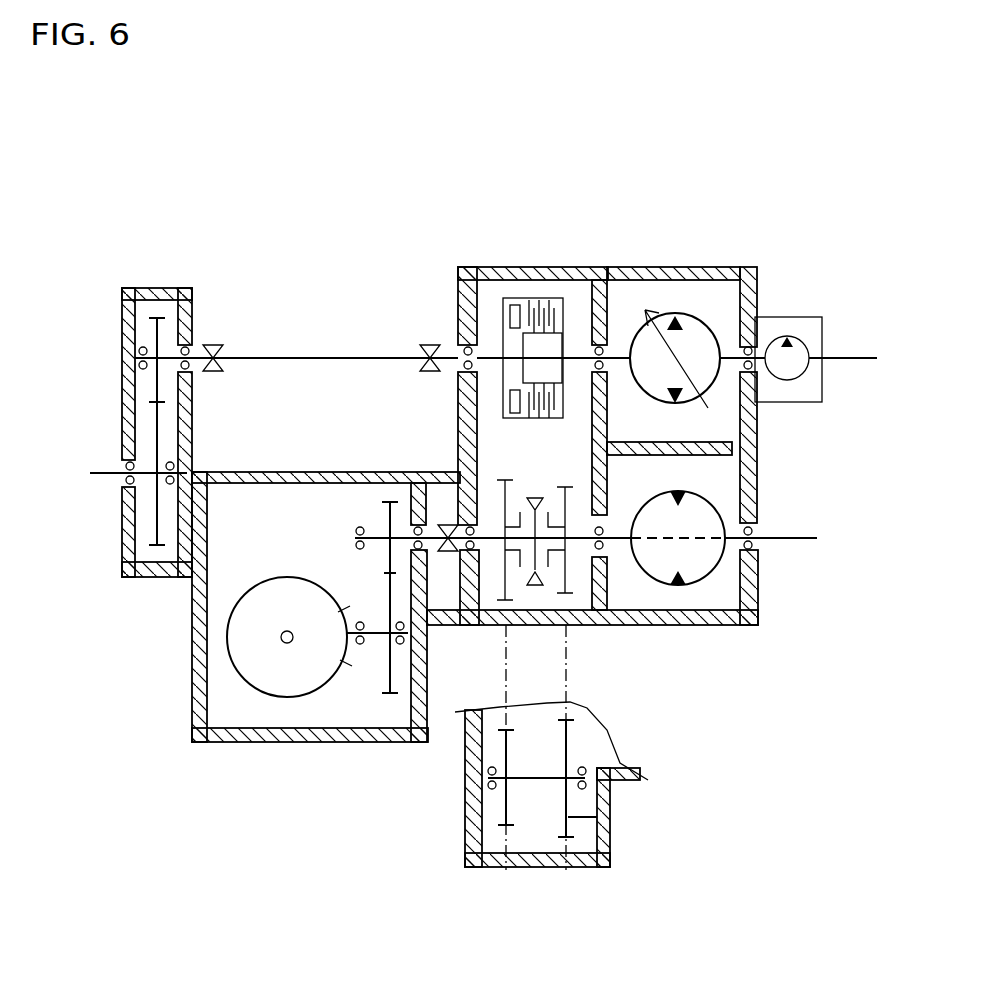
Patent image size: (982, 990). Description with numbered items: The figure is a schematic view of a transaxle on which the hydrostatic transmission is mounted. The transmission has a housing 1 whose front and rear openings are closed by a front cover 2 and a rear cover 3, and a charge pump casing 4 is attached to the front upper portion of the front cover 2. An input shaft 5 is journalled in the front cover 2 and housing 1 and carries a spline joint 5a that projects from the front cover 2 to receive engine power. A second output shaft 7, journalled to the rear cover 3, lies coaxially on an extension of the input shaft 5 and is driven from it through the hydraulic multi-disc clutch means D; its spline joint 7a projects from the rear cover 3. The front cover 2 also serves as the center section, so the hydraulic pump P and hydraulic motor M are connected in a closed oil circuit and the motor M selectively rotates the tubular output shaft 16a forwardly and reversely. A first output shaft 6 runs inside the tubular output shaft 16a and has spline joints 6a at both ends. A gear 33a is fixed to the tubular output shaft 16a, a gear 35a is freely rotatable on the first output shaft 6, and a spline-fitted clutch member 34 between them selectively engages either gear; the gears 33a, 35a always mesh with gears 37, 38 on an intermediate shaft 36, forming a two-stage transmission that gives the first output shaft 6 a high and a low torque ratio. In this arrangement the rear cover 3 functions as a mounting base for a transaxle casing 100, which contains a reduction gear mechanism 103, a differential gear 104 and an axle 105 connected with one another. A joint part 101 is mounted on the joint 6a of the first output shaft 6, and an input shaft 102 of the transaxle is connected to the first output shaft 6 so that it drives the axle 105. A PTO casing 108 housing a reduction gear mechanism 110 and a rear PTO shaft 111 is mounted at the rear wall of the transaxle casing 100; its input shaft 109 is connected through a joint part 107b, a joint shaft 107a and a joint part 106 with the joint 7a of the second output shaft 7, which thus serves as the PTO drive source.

The housing 1 is at (580, 265).
The front cover 2 is at (747, 268).
The rear cover 3 is at (463, 265).
The charge pump casing 4 is at (792, 317).
The input shaft 5 is at (620, 355).
The spline joint 5a is at (857, 357).
The first output shaft 6 is at (733, 552).
The spline joint 6a is at (448, 552).
The second output shaft 7 is at (495, 290).
The spline joint 7a is at (455, 348).
The clutch means D is at (537, 295).
The hydraulic pump P is at (680, 312).
The hydraulic motor M is at (705, 497).
The tubular output shaft 16a is at (628, 560).
The gear 33a is at (565, 487).
The clutch member 34 is at (537, 582).
The gear 35a is at (507, 480).
The intermediate shaft 36 is at (552, 773).
The gear 37 is at (597, 818).
The gear 38 is at (512, 808).
The transaxle casing 100 is at (282, 742).
The joint part 101 is at (447, 523).
The input shaft 102 is at (375, 535).
The reduction gear mechanism 103 is at (381, 691).
The differential gear 104 is at (219, 689).
The axle 105 is at (287, 643).
The joint part 106 is at (428, 345).
The joint shaft 107a is at (292, 357).
The joint part 107b is at (213, 345).
The PTO casing 108 is at (125, 565).
The input shaft 109 is at (170, 355).
The reduction gear mechanism 110 is at (151, 301).
The rear PTO shaft 111 is at (98, 473).